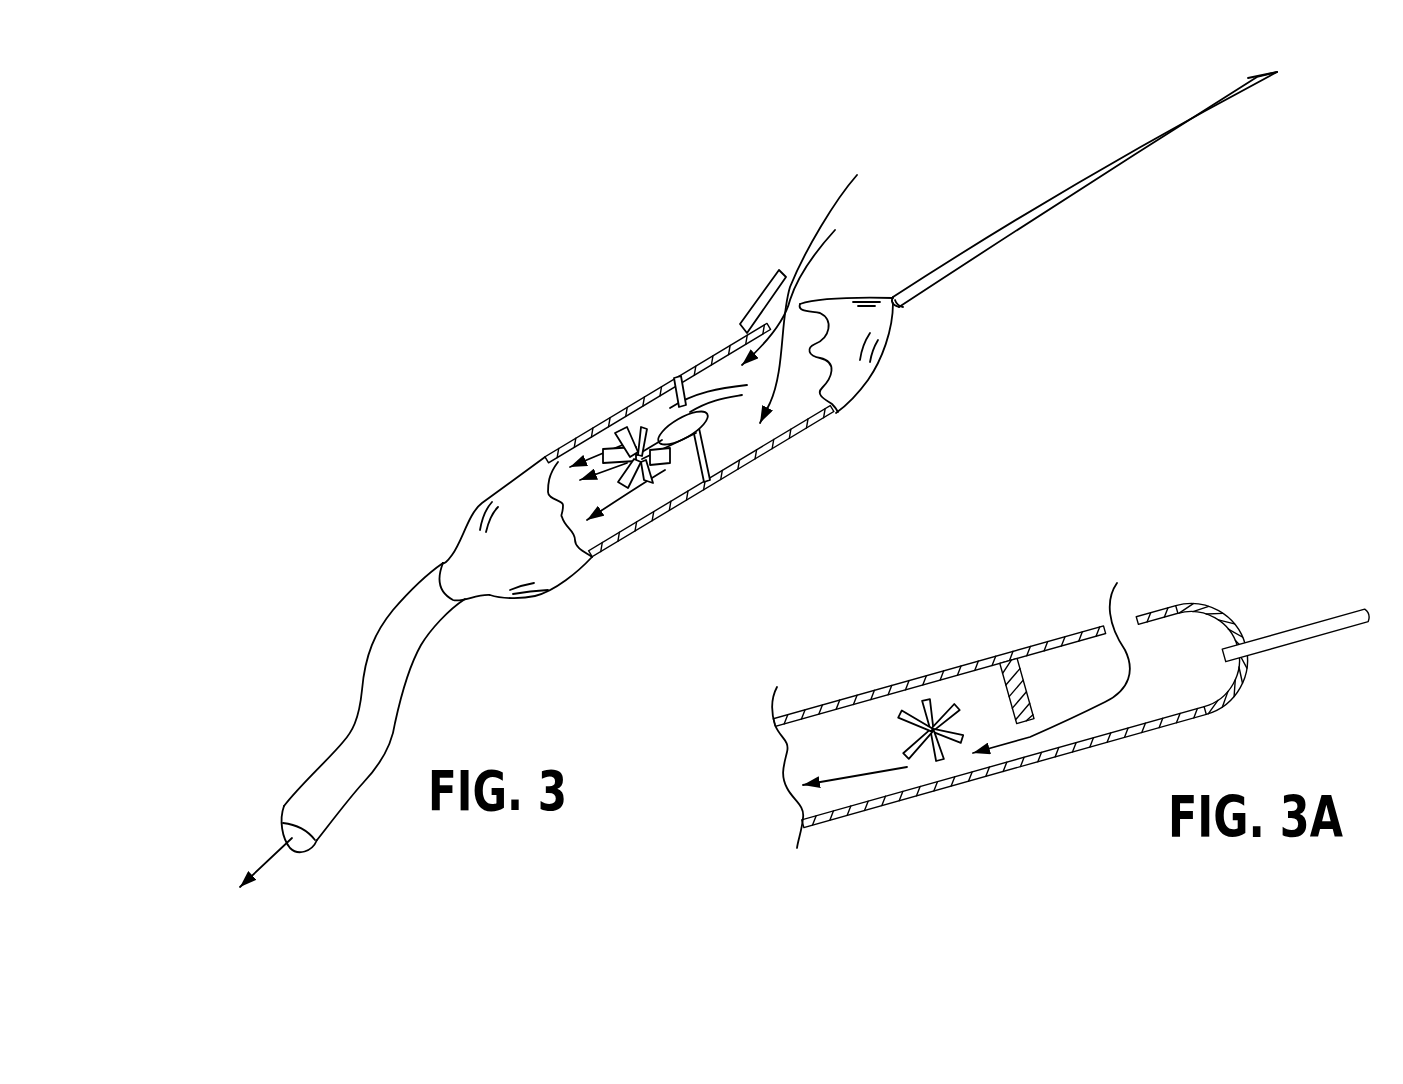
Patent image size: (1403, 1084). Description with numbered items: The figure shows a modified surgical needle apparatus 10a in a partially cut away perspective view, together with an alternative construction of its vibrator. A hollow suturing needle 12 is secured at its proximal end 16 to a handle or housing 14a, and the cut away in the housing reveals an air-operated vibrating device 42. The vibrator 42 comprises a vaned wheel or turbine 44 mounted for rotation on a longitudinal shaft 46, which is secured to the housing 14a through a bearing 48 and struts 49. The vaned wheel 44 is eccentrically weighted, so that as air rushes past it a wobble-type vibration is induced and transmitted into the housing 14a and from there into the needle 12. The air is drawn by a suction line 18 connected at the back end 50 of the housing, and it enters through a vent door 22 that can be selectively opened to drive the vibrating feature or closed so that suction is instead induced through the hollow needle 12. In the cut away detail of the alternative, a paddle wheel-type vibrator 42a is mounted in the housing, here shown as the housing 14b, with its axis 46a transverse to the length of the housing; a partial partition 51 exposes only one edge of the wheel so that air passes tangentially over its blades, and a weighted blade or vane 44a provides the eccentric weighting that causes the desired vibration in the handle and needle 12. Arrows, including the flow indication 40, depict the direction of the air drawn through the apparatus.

In FIG. 3, the modified surgical needle apparatus 10a is at (491, 427).
In FIG. 3, the suturing needle 12 is at (1082, 178).
In FIG. 3A, the suturing needle 12 is at (1300, 632).
In FIG. 3, the handle or housing 14a is at (860, 387).
In FIG. 3A, the catheter distal tip 14b is at (1165, 606).
In FIG. 3, the proximal end 16 is at (912, 305).
In FIG. 3, the suction line 18 is at (375, 628).
In FIG. 3, the vent door 22 is at (816, 286).
In FIG. 3A, the vent door 22 is at (1123, 617).
In FIG. 3, the fluid flow direction 40 is at (736, 190).
In FIG. 3, the vibrating device 42 is at (650, 422).
In FIG. 3A, the paddle wheel-type vibrator 42a is at (921, 797).
In FIG. 3, the vaned wheel or turbine 44 is at (645, 468).
In FIG. 3A, the weighted blade or vane 44a is at (932, 733).
In FIG. 3, the longitudinal shaft 46 is at (643, 477).
In FIG. 3A, the axis 46a is at (933, 728).
In FIG. 3, the bearing 48 is at (697, 455).
In FIG. 3, the struts 49 is at (677, 378).
In FIG. 3, the back end 50 is at (492, 600).
In FIG. 3A, the partial partition 51 is at (1027, 697).